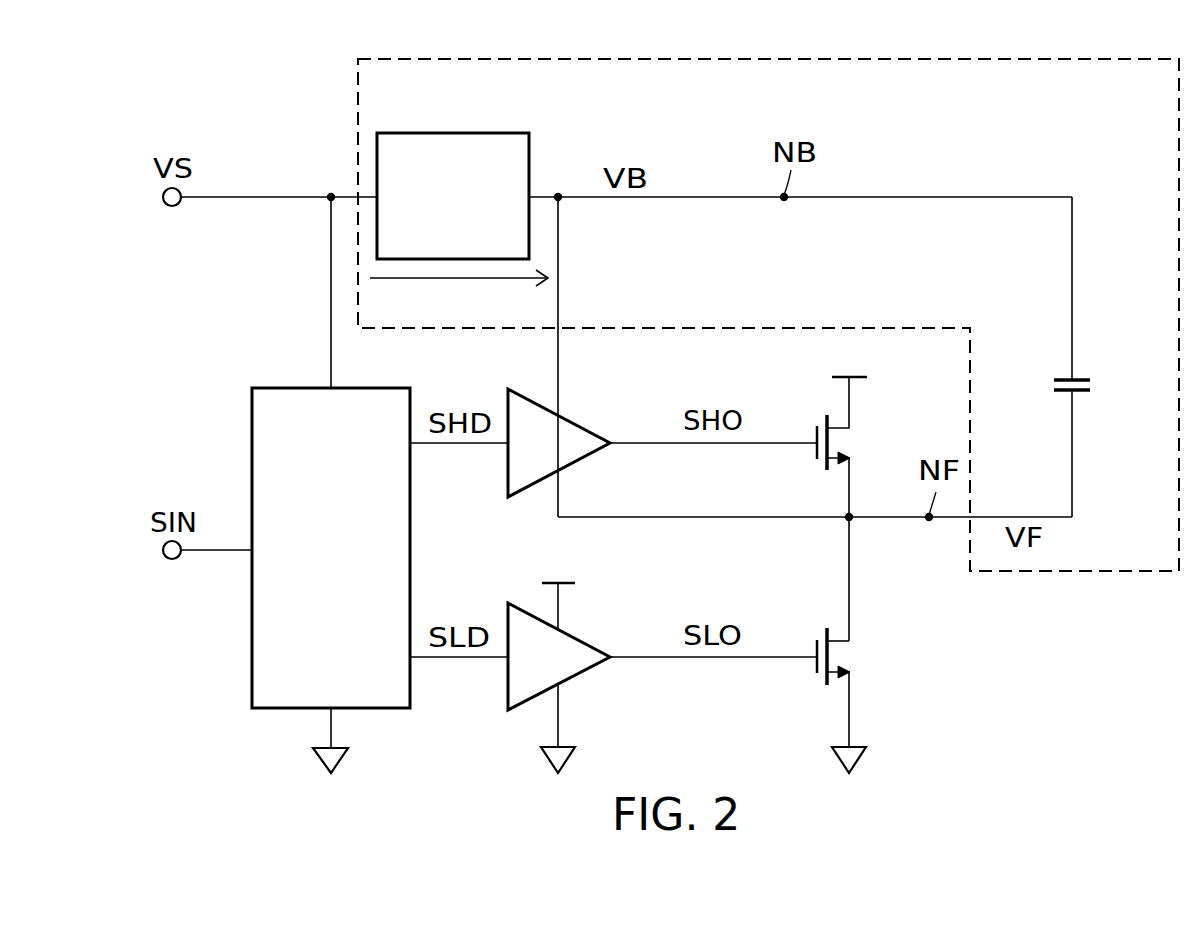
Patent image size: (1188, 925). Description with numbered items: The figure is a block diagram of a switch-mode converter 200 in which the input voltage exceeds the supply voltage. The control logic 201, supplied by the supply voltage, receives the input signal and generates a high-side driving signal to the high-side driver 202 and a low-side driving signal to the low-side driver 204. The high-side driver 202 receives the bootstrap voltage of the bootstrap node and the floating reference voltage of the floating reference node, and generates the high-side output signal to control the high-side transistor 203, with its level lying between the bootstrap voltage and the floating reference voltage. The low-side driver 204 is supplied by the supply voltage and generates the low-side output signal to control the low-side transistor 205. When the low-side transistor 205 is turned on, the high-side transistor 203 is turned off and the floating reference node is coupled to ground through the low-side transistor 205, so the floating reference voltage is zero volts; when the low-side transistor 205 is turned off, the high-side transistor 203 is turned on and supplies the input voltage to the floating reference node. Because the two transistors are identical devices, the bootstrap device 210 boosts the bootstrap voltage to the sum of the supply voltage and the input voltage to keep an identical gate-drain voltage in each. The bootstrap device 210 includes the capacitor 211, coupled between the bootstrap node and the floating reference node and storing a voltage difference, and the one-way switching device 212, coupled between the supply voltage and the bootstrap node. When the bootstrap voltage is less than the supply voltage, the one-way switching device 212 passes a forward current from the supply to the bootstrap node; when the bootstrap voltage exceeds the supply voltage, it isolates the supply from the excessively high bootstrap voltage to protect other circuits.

The switch-mode converter 200 is at (1087, 782).
The control logic 201 is at (253, 385).
The high-side driver 202 is at (580, 424).
The high-side transistor 203 is at (843, 441).
The low-side driver 204 is at (580, 638).
The low-side transistor 205 is at (843, 655).
The bootstrap device 210 is at (358, 62).
The capacitor 211 is at (1093, 384).
The one-way switching device 212 is at (378, 133).